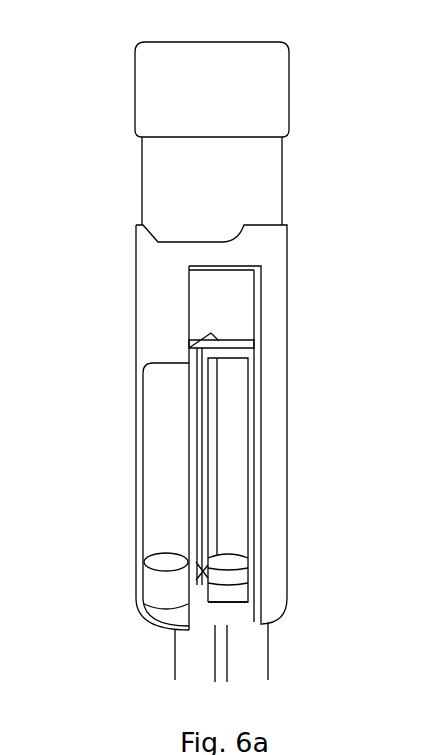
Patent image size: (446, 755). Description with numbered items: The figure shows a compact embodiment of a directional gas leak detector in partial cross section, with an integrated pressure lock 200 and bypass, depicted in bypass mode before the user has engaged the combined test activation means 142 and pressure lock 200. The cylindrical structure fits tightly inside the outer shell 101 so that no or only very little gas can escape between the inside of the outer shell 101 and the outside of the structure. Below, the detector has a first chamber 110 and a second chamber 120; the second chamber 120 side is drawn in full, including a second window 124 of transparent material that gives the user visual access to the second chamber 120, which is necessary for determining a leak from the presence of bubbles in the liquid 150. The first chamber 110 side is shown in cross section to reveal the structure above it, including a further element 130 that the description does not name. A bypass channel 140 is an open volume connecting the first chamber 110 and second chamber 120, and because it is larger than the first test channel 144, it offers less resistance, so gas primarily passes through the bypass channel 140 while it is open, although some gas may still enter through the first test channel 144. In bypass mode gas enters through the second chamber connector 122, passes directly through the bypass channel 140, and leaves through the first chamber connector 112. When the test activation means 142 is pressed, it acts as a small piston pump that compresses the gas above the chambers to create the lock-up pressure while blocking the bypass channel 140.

The test activation means 142 is at (163, 78).
The pressure lock 200 is at (165, 187).
The outer shell 101 is at (155, 282).
The second window 124 is at (160, 362).
The second chamber 120 is at (168, 507).
The bypass channel 140 is at (230, 338).
The first test channel 144 is at (234, 367).
The first chamber 110 is at (235, 462).
The valve 130 is at (210, 575).
The first chamber connector 112 is at (258, 643).
The liquid 150 is at (203, 633).
The second chamber connector 122 is at (200, 650).